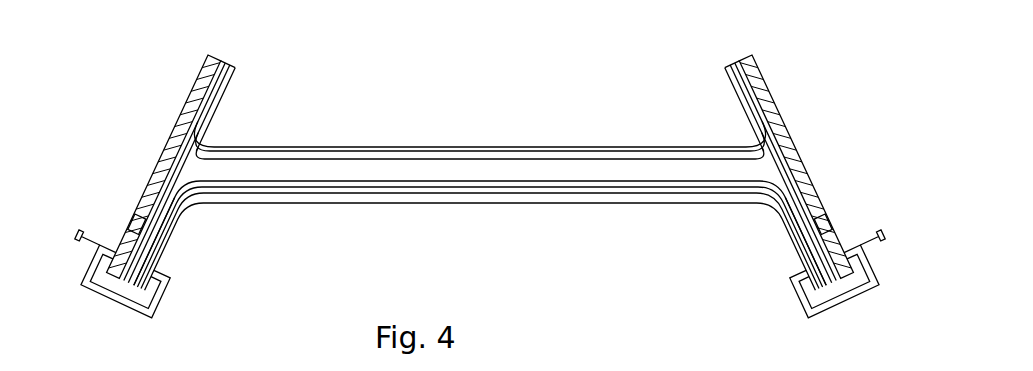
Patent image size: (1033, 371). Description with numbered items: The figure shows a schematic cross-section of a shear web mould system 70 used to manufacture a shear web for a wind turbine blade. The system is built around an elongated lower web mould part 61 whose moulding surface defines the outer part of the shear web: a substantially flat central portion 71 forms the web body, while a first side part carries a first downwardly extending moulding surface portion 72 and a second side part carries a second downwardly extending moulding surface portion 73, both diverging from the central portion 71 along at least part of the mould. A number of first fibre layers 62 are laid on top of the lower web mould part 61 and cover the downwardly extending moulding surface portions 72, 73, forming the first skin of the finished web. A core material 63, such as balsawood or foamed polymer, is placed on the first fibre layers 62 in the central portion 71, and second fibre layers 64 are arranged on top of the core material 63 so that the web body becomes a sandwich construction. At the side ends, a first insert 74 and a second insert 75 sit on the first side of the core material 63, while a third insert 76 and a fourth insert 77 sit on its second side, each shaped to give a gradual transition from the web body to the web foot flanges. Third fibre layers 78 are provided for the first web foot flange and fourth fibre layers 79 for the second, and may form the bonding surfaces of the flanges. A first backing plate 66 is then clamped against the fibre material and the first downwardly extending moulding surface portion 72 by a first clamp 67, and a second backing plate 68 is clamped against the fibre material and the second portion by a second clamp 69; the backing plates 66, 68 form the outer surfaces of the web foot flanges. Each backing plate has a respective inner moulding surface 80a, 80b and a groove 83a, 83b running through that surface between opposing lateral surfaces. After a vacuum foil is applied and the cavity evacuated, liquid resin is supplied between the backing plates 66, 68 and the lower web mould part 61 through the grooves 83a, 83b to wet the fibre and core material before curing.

The lower web mould part 61 is at (446, 212).
The first fibre layers 62 is at (642, 190).
The core material 63 is at (305, 172).
The second fibre layers 64 is at (446, 158).
The first backing plate 66 is at (176, 72).
The first clamp 67 is at (174, 277).
The second backing plate 68 is at (760, 84).
The second clamp 69 is at (792, 277).
The shear web mould system 70 is at (625, 92).
The central portion 71 is at (348, 200).
The first downwardly extending moulding surface portion 72 is at (160, 223).
The second downwardly extending moulding surface portion 73 is at (808, 237).
The first insert 74 is at (150, 192).
The second insert 75 is at (826, 205).
The third insert 76 is at (160, 147).
The fourth insert 77 is at (782, 130).
The third fibre layers 78 is at (197, 80).
The fourth fibre layers 79 is at (802, 168).
The inner moulding surface 80a is at (233, 67).
The inner moulding surface 80b is at (730, 70).
The groove 83a is at (167, 223).
The groove 83b is at (713, 228).